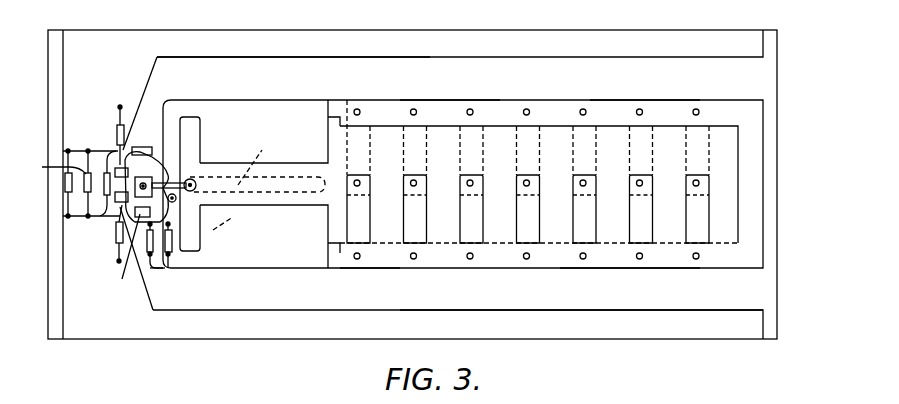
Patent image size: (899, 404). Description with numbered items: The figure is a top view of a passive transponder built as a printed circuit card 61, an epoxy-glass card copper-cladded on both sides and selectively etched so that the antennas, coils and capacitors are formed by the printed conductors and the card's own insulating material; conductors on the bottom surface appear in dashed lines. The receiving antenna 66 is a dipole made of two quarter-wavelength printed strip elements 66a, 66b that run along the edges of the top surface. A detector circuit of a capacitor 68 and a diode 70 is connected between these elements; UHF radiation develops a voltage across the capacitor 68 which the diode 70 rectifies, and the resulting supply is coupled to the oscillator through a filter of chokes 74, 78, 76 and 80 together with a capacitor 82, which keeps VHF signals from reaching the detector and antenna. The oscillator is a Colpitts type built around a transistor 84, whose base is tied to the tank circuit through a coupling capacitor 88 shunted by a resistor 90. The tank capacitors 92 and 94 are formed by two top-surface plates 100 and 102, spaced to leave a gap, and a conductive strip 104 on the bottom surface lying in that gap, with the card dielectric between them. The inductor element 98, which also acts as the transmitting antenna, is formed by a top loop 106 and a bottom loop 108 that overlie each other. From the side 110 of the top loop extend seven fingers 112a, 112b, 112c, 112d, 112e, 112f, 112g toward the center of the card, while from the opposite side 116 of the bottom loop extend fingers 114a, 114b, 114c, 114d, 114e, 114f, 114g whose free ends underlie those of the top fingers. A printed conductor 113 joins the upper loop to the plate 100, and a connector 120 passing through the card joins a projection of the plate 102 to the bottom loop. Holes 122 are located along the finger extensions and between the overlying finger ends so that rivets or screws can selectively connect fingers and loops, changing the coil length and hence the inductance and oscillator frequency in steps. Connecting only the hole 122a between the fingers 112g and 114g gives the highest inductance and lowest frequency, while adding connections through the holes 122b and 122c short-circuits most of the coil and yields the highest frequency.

The printed circuit card 61 is at (772, 178).
The receiving antenna 66 is at (755, 45).
The dipole element 66a is at (428, 30).
The dipole element 66b is at (575, 338).
The capacitor 68 is at (63, 182).
The diode 70 is at (69, 162).
The choke 74 is at (118, 135).
The choke 76 is at (115, 233).
The choke 78 is at (147, 147).
The choke 80 is at (120, 257).
The capacitor 82 is at (91, 199).
The transistor 84 is at (150, 187).
The coupling capacitor 88 is at (170, 264).
The resistor 90 is at (151, 264).
The capacitor 92 is at (283, 190).
The capacitor 94 is at (313, 137).
The inductor element 98 is at (440, 108).
The plate 100 is at (250, 142).
The plate 102 is at (250, 254).
The conductive strip 104 is at (313, 190).
The loop 106 is at (606, 108).
The loop 108 is at (347, 264).
The side of top loop 110 is at (624, 262).
The finger 112a is at (700, 211).
The finger 112b is at (644, 211).
The finger 112c is at (587, 211).
The finger 112d is at (530, 211).
The finger 112e is at (474, 211).
The finger 112f is at (418, 211).
The finger 112g is at (361, 211).
The printed conductor 113 is at (335, 108).
The finger 114a is at (700, 164).
The finger 114b is at (644, 164).
The finger 114c is at (587, 164).
The finger 114d is at (530, 164).
The finger 114e is at (474, 164).
The finger 114f is at (418, 164).
The finger 114g is at (361, 164).
The side of bottom loop 116 is at (540, 120).
The connector 120 is at (338, 258).
The holes 122 is at (471, 108).
The hole 122a is at (360, 185).
The hole 122b is at (358, 109).
The hole 122c is at (359, 258).